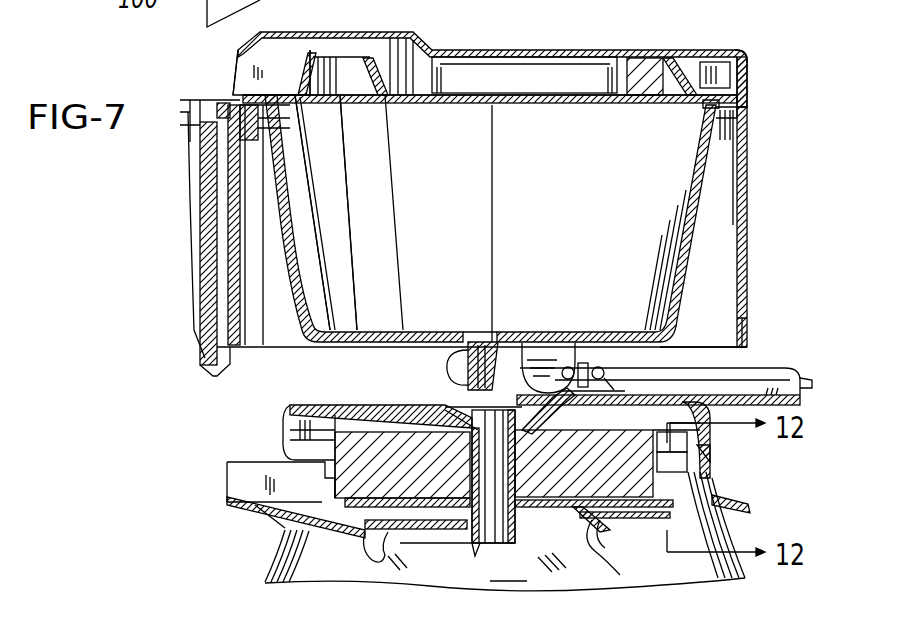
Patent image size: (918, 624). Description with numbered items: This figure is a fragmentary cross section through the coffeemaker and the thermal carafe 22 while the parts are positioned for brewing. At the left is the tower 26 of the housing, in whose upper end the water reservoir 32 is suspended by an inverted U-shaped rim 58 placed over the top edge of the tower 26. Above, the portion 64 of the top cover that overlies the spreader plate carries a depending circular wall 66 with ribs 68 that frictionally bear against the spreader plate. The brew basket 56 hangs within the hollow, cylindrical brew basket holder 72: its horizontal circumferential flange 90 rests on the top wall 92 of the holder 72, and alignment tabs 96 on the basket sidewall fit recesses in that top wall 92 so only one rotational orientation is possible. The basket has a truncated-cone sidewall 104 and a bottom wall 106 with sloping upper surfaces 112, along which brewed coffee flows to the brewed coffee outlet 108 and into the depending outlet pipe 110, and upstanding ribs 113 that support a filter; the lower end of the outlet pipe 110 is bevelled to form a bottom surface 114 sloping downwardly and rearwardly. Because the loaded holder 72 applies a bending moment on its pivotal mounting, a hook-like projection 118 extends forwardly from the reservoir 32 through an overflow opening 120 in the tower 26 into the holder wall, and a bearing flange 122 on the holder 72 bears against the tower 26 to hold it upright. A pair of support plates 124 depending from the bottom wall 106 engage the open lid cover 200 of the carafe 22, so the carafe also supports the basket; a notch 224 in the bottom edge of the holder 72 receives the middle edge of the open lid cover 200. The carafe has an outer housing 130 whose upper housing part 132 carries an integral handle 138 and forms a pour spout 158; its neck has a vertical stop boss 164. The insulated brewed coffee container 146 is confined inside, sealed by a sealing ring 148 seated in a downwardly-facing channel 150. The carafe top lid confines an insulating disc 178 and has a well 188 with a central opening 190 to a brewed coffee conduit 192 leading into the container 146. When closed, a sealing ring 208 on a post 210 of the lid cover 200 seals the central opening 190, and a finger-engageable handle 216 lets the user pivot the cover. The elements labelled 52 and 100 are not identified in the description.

The thermal carafe 22 is at (740, 541).
The tower 26 is at (207, 258).
The water reservoir 32 is at (200, 200).
The lid compartment 52 is at (583, 100).
The brew basket 56 is at (716, 162).
The inverted U-shaped rim 58 is at (690, 68).
The portion of the top cover 64 is at (550, 48).
The depending circular wall 66 is at (748, 80).
The ribs 68 is at (737, 52).
The brew basket holder 72 is at (751, 232).
The circumferential flange 90 is at (710, 107).
The top wall 92 is at (748, 118).
The alignment tabs 96 is at (258, 122).
The lid end wall 100 is at (238, 55).
The sidewall 104 is at (707, 200).
The bottom wall 106 is at (332, 342).
The brewed coffee outlet 108 is at (484, 333).
The outlet pipe 110 is at (462, 333).
The sloping upper surfaces 112 is at (367, 330).
The upstanding ribs 113 is at (373, 330).
The bottom surface 114 is at (455, 380).
The hook-like projection 118 is at (185, 126).
The overflow opening 120 is at (215, 103).
The bearing flange 122 is at (219, 380).
The support plates 124 is at (600, 368).
The outer housing 130 is at (264, 544).
The upper housing part 132 is at (262, 574).
The handle 138 is at (752, 507).
The insulated brewed coffee container 146 is at (509, 566).
The sealing ring 148 is at (366, 540).
The downwardly-facing channel 150 is at (593, 523).
The pour spout 158 is at (228, 480).
The vertical stop boss 164 is at (670, 495).
The insulating disc 178 is at (348, 440).
The well 188 is at (460, 412).
The central opening 190 is at (503, 420).
The brewed coffee conduit 192 is at (468, 520).
The lid cover 200 is at (763, 373).
The sealing ring 208 is at (549, 365).
The post 210 is at (581, 363).
The finger-engageable handle 216 is at (812, 376).
The notch 224 is at (746, 322).